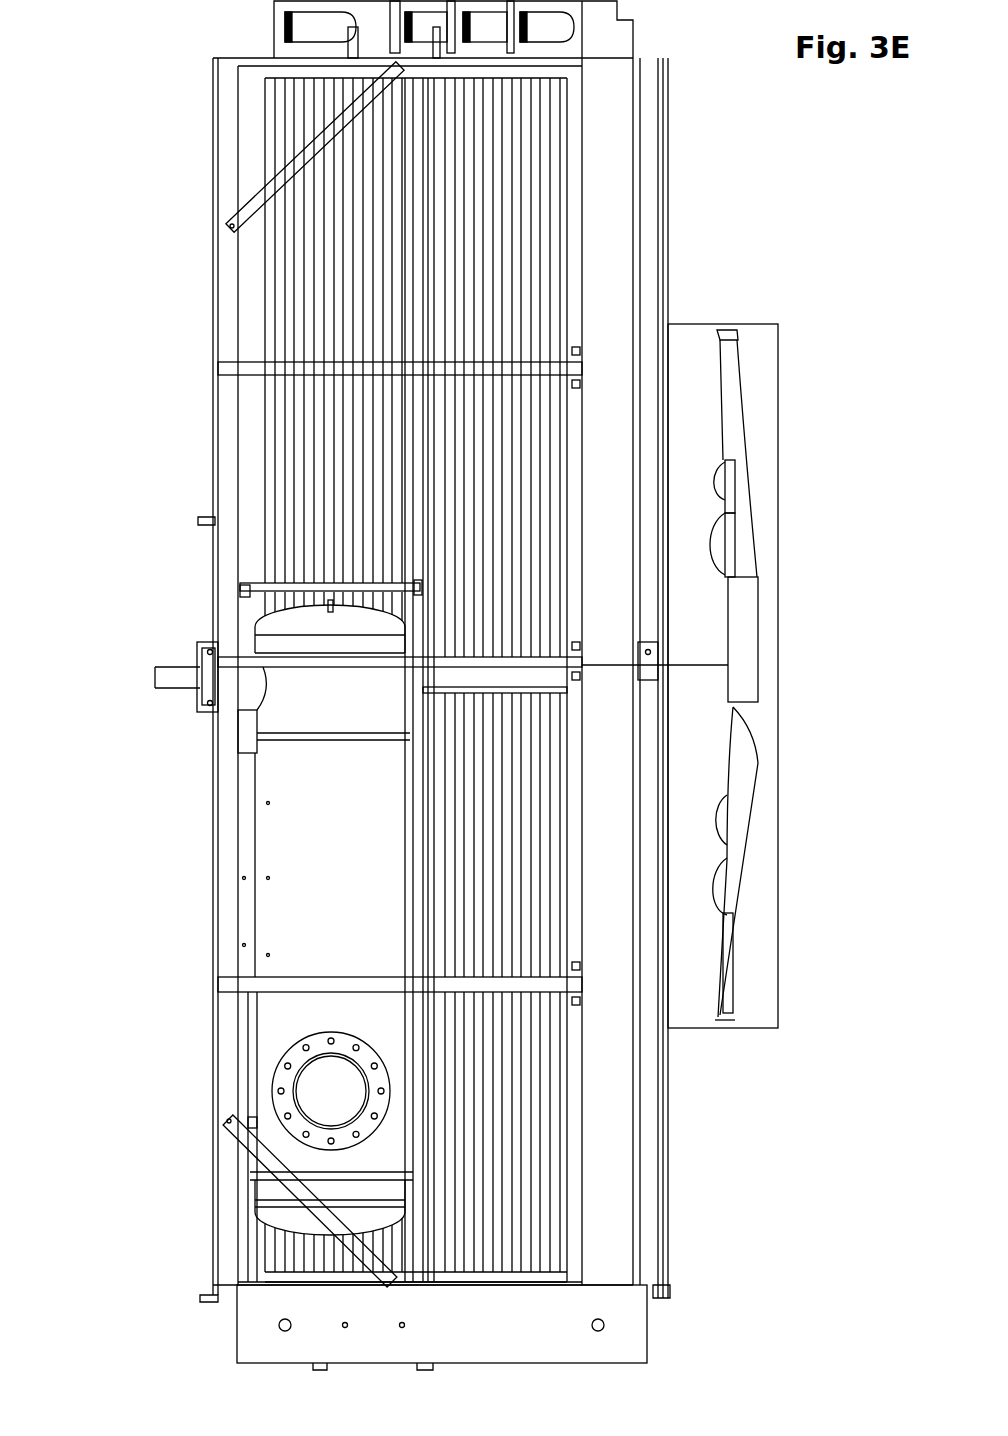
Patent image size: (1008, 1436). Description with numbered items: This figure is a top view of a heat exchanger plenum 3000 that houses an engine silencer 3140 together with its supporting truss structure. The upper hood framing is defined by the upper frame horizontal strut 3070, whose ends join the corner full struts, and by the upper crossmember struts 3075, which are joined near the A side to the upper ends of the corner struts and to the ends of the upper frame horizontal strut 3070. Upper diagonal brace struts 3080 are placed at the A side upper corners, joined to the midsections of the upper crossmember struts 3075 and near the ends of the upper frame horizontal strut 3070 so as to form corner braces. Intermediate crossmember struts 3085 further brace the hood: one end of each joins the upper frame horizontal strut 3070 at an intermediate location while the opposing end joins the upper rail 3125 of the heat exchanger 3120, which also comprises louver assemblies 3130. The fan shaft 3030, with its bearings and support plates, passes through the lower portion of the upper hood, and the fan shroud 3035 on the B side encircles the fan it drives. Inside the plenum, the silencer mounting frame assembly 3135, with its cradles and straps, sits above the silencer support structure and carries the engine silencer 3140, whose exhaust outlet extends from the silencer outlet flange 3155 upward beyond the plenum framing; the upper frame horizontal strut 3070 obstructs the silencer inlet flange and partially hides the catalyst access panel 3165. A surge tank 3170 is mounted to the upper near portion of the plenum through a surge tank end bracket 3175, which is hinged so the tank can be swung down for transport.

The heat exchanger plenum 3000 is at (798, 177).
The fan shaft 3030 is at (163, 677).
The fan shroud 3035 is at (765, 352).
The upper frame horizontal strut 3070 is at (230, 420).
The upper crossmember struts 3075 is at (285, 62).
The upper diagonal brace struts 3080 is at (232, 226).
The intermediate crossmember struts 3085 is at (262, 362).
The heat exchanger 3120 is at (615, 310).
The upper rail 3125 is at (570, 262).
The louver assemblies 3130 is at (430, 268).
The silencer mounting frame assembly 3135 is at (250, 583).
The engine silencer 3140 is at (278, 815).
The silencer outlet flange 3155 is at (280, 1090).
The catalyst access panel 3165 is at (247, 858).
The surge tank 3170 is at (478, 1302).
The surge tank end bracket 3175 is at (650, 1330).